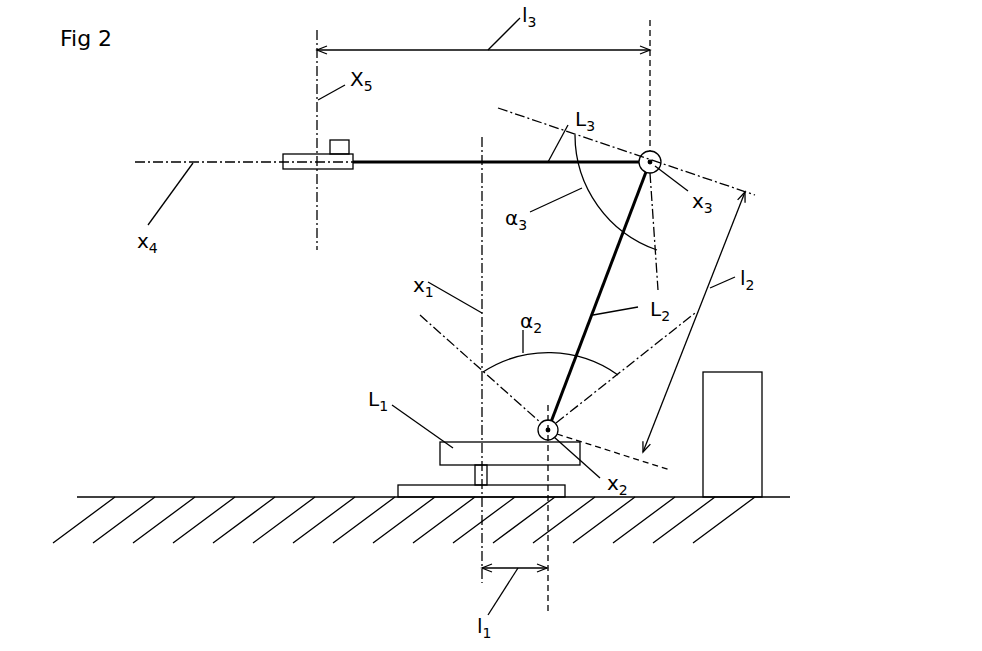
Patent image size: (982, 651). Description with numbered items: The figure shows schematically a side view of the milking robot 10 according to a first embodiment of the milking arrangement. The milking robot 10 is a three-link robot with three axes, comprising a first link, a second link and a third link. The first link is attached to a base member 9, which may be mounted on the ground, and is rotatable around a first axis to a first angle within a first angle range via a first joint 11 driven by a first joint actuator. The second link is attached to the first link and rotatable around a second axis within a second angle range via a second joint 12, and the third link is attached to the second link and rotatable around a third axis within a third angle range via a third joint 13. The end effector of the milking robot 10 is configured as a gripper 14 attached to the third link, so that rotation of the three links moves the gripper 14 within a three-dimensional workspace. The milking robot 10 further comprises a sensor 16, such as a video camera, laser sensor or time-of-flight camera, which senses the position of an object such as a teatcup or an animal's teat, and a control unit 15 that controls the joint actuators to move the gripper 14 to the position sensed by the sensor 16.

The base member 9 is at (415, 492).
The milking robot 10 is at (308, 305).
The first joint 11 is at (475, 466).
The second joint 12 is at (542, 425).
The third joint 13 is at (658, 154).
The gripper 14 is at (292, 155).
The control unit 15 is at (722, 398).
The sensor 16 is at (340, 143).